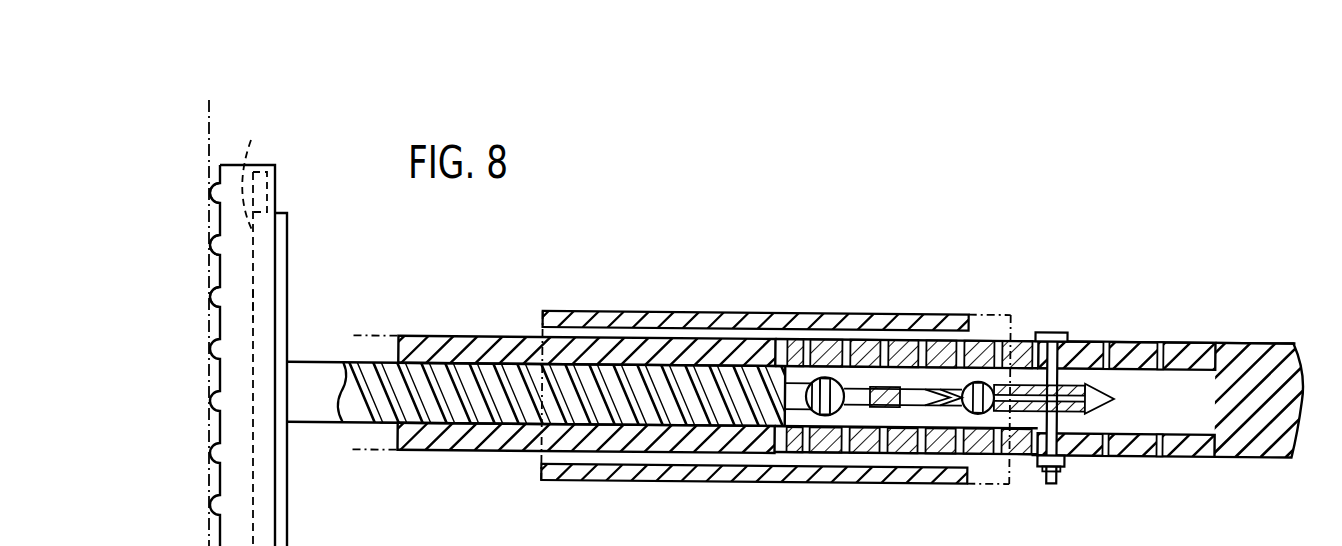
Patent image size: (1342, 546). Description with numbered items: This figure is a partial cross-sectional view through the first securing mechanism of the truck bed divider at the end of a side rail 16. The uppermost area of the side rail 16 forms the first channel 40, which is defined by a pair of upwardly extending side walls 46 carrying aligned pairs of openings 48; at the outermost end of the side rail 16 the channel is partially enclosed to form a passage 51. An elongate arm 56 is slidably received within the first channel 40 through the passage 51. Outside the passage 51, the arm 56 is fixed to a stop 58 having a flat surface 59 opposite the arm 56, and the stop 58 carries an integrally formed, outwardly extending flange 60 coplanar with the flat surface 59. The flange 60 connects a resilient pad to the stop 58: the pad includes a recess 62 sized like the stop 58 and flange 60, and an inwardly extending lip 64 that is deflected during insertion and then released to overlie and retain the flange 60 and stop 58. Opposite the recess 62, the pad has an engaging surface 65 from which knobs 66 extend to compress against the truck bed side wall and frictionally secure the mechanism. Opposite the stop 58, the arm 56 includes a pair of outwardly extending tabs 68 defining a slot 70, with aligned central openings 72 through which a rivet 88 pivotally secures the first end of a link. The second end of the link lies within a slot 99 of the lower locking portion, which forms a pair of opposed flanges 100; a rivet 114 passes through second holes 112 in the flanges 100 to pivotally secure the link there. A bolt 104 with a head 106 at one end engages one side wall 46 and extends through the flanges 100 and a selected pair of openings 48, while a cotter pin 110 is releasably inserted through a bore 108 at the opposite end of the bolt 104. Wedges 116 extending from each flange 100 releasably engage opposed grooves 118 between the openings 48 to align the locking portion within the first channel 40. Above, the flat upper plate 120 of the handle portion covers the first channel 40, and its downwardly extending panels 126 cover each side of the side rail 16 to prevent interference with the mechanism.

The side rail 16 is at (1273, 352).
The first channel 40 is at (1199, 375).
The side walls 46 is at (440, 350).
The openings 48 is at (1105, 341).
The passage 51 is at (397, 427).
The elongate arm 56 is at (305, 424).
The stop 58 is at (288, 262).
The flat surface 59 is at (249, 333).
The flange 60 is at (263, 165).
The recess 62 is at (260, 313).
The lip 64 is at (268, 200).
The engaging surface 65 is at (213, 217).
The knobs 66 is at (212, 292).
The tabs 68 is at (808, 358).
The slot 70 is at (790, 400).
The central openings 72 is at (806, 414).
The rivet 88 is at (826, 378).
The slot 99 is at (1038, 457).
The flanges 100 is at (1112, 399).
The bolt 104 is at (1068, 338).
The head 106 is at (1047, 336).
The bore 108 is at (1066, 460).
The cotter pin 110 is at (1060, 472).
The second hole 112 is at (940, 372).
The rivet 114 is at (979, 386).
The wedges 116 is at (913, 400).
The grooves 118 is at (853, 358).
The upper plate 120 is at (1227, 501).
The panels 126 is at (558, 312).